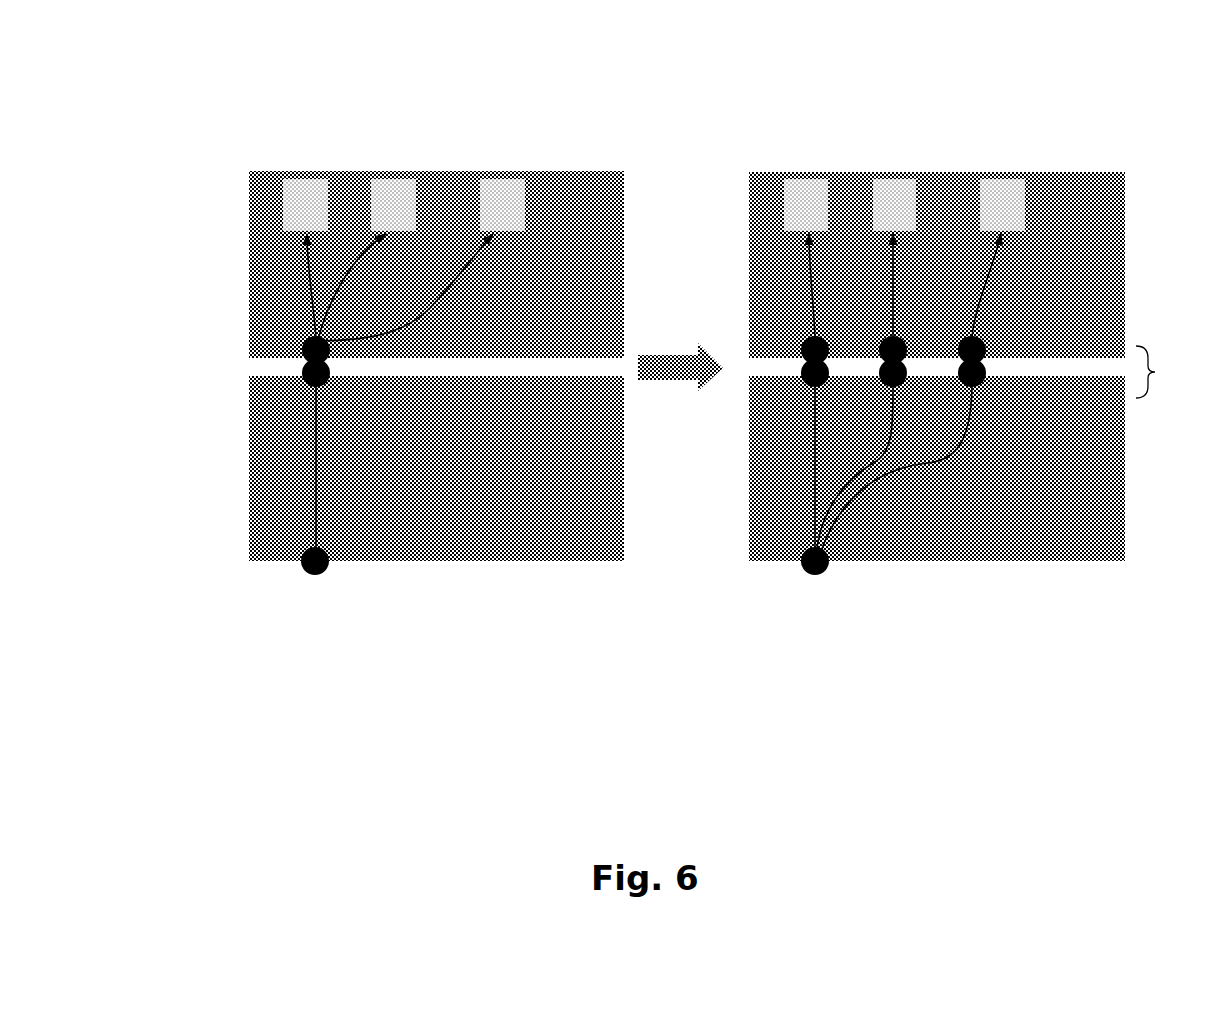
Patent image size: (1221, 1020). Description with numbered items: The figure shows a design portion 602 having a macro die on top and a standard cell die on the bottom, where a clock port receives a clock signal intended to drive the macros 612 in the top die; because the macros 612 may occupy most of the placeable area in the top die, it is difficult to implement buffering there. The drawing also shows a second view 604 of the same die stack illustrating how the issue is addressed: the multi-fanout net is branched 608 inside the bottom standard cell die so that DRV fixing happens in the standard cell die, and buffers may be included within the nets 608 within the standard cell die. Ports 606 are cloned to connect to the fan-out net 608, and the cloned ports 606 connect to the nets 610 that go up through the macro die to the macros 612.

The design portion 602 is at (220, 134).
The second die stack with clock feedthrough 604 is at (735, 134).
The ports 606 is at (1173, 372).
The nets 608 is at (785, 456).
The nets 610 is at (790, 275).
The macros 612 is at (985, 170).